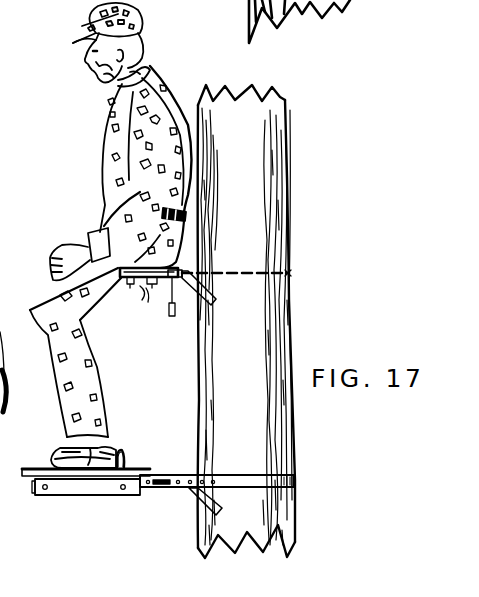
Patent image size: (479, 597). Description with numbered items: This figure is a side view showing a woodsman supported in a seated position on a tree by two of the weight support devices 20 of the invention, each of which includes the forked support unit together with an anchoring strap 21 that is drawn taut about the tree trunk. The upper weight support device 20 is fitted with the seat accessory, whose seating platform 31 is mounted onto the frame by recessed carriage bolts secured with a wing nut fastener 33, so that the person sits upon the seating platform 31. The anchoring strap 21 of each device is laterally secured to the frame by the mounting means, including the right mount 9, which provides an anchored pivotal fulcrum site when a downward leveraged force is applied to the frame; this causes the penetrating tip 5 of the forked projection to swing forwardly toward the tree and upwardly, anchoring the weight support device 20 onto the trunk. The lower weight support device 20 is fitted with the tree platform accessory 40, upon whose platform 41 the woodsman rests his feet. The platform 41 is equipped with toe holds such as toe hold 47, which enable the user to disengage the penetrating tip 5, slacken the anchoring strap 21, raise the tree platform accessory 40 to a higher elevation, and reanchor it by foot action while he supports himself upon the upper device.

The penetrating tip 5 is at (212, 304).
The right mount 9 is at (182, 273).
The weight support device 20 is at (166, 498).
The anchoring strap 21 is at (290, 271).
The seating platform 31 is at (109, 298).
The wing nut fastener 33 is at (150, 287).
The tree platform accessory 40 is at (60, 500).
The platform 41 is at (43, 465).
The toe hold 47 is at (126, 455).